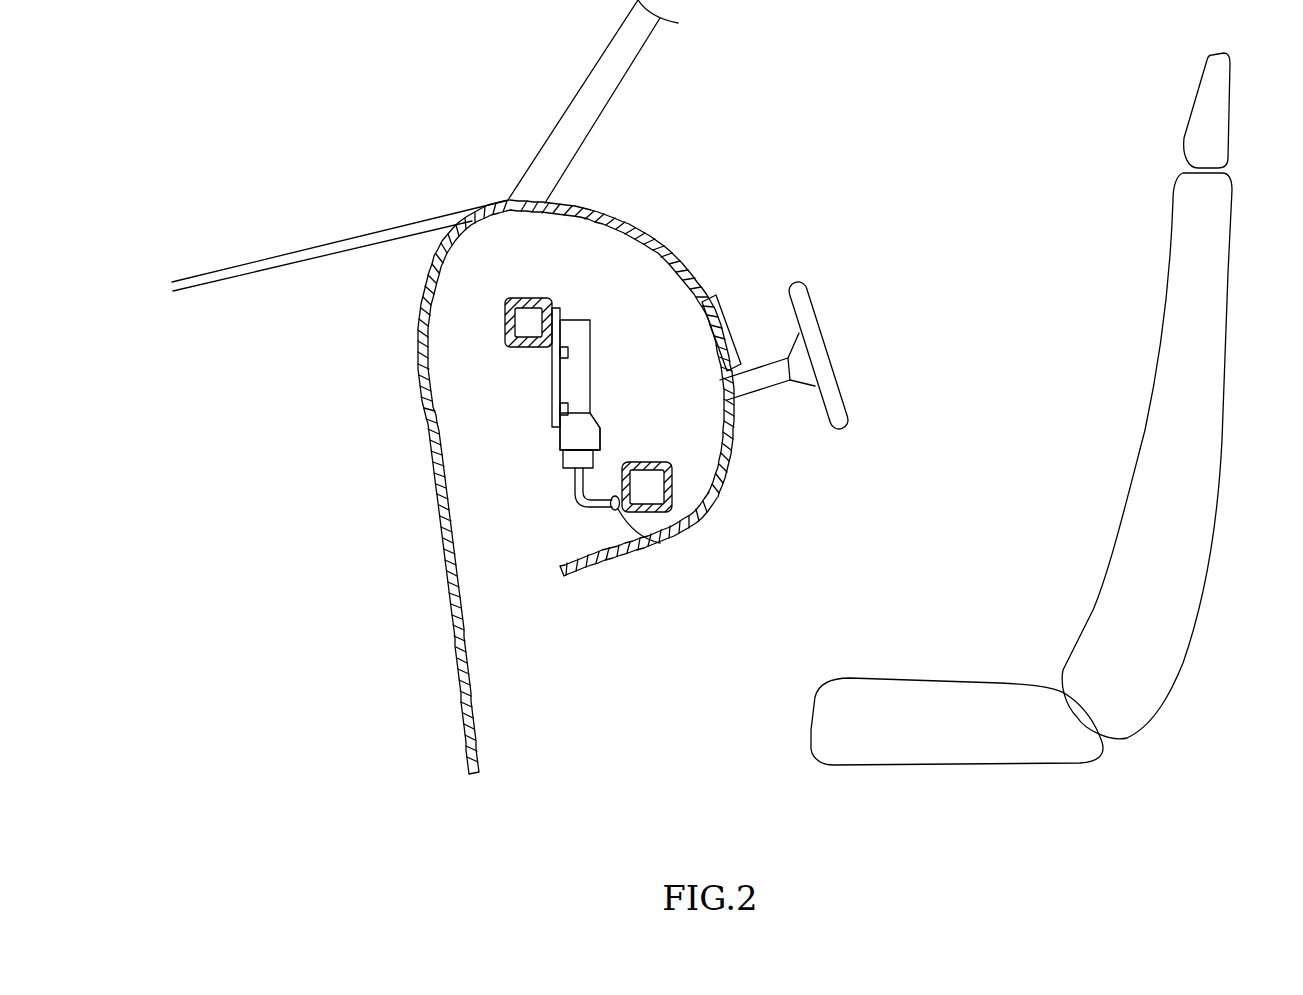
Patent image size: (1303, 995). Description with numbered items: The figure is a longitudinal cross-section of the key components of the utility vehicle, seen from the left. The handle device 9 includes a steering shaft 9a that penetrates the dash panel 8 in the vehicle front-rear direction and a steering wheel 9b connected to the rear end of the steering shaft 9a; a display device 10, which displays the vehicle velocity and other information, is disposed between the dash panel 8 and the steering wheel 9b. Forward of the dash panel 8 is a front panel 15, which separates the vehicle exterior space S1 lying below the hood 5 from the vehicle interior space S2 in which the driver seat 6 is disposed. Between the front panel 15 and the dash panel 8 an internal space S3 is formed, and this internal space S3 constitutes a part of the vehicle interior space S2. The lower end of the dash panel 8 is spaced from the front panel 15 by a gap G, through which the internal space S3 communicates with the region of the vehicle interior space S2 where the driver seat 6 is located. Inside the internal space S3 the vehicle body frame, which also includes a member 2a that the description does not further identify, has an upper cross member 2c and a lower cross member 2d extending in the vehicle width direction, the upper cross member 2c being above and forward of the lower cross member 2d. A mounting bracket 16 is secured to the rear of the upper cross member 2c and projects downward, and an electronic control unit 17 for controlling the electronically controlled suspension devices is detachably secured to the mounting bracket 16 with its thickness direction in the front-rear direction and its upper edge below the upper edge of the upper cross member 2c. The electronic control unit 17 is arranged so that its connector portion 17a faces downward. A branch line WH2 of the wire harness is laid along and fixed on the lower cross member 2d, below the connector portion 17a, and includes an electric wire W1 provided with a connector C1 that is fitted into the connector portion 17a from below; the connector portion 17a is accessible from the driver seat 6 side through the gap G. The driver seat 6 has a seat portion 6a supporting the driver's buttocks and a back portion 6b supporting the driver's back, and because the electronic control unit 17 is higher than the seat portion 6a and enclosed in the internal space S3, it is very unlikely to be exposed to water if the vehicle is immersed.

The front pillar 2a is at (610, 60).
The upper cross member 2c is at (507, 322).
The lower cross member 2d is at (667, 483).
The hood 5 is at (266, 258).
The driver seat 6 is at (1021, 409).
The seat portion 6a is at (954, 678).
The back portion 6b is at (1153, 380).
The dash panel 8 is at (615, 212).
The handle device 9 is at (819, 316).
The steering shaft 9a is at (762, 360).
The steering wheel 9b is at (807, 292).
The display device 10 is at (707, 297).
The front panel 15 is at (432, 463).
The mounting bracket 16 is at (552, 378).
The electronic control unit 17 is at (585, 350).
The connector portion 17a is at (593, 438).
The connector C1 is at (563, 460).
The electric wire W1 is at (600, 510).
The branch line WH2 is at (650, 540).
The gap G is at (512, 583).
The vehicle exterior space S1 is at (270, 645).
The vehicle interior space S2 is at (688, 642).
The internal space S3 is at (483, 268).